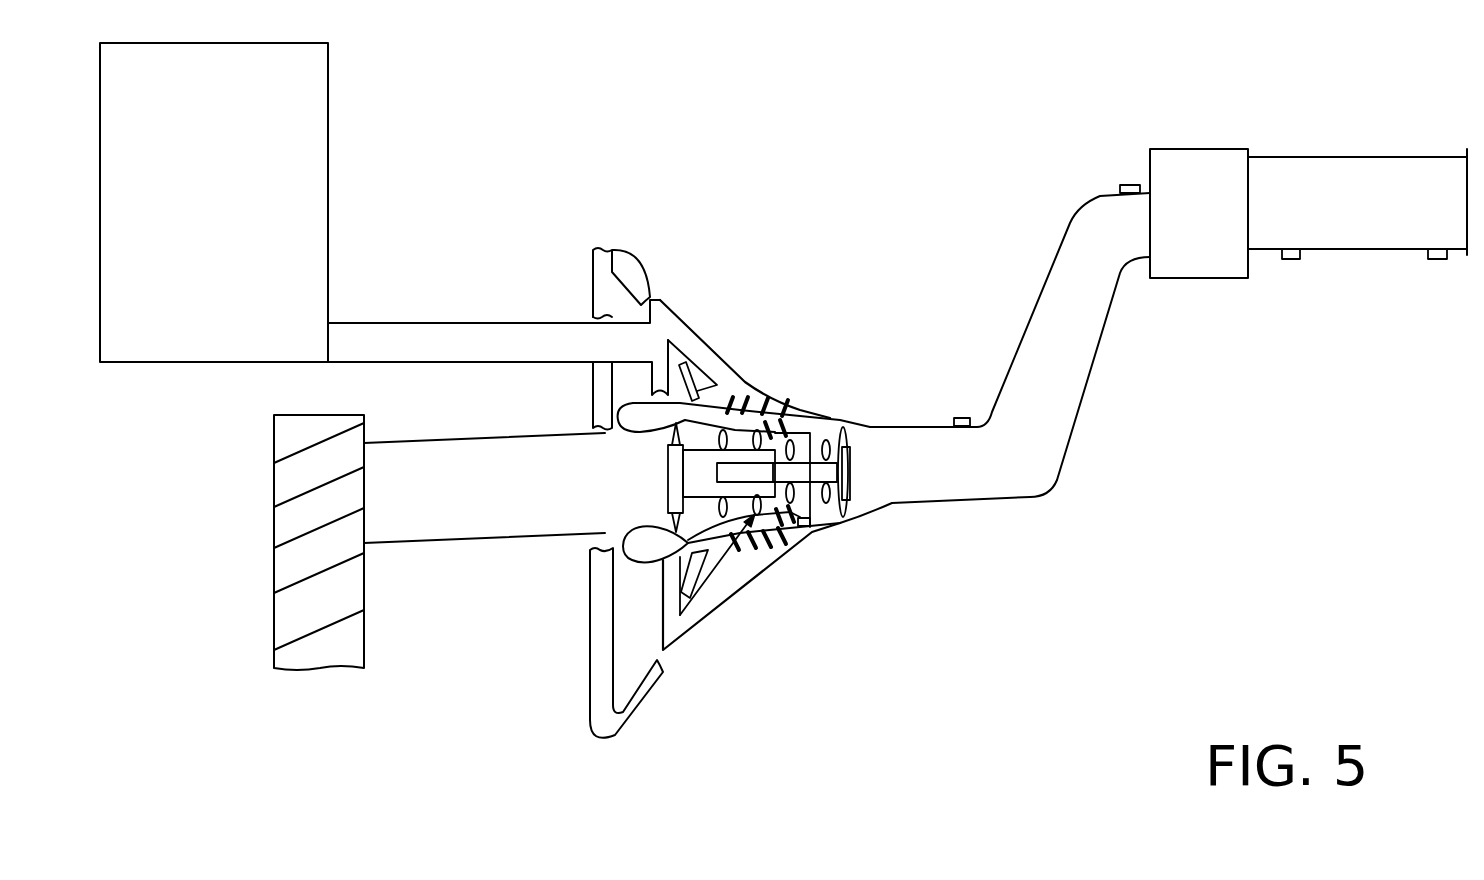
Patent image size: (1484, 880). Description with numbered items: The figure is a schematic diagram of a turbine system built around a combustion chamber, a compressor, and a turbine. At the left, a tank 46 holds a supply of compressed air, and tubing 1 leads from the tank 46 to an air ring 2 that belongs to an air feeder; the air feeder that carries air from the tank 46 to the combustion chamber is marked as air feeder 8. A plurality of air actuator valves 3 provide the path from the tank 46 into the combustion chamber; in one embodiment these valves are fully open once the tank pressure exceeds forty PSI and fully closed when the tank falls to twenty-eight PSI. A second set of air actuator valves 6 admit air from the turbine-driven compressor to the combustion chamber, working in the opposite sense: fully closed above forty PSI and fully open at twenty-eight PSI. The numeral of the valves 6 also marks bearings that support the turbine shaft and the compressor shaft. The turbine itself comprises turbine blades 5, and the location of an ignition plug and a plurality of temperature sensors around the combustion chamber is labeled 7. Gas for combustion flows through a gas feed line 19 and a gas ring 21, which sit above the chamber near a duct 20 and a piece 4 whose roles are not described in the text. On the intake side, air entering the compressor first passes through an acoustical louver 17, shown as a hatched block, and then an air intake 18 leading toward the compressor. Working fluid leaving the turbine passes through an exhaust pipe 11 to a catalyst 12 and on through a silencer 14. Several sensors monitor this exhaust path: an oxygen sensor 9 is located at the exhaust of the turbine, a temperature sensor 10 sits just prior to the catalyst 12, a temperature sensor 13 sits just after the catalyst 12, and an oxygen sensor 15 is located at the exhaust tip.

The tubing 1 is at (484, 309).
The air ring 2 is at (686, 320).
The air actuator valves 3 is at (750, 400).
The bearing block 4 is at (788, 430).
The turbine blades 5 is at (860, 415).
The air actuator valves 6 is at (718, 534).
The ignition plug and temperature sensors location 7 is at (811, 542).
The air feeder 8 is at (784, 573).
The oxygen sensor 9 is at (962, 399).
The temperature sensor 10 is at (1106, 171).
The exhaust pipe 11 is at (1089, 401).
The catalyst 12 is at (1200, 299).
The temperature sensor 13 is at (1295, 275).
The silencer 14 is at (1425, 273).
The oxygen sensor 15 is at (1464, 275).
The acoustical louver 17 is at (379, 643).
The air intake 18 is at (500, 554).
The gas feed line 19 is at (720, 348).
The inlet duct 20 is at (601, 224).
The gas ring 21 is at (640, 261).
The tank 46 is at (318, 178).